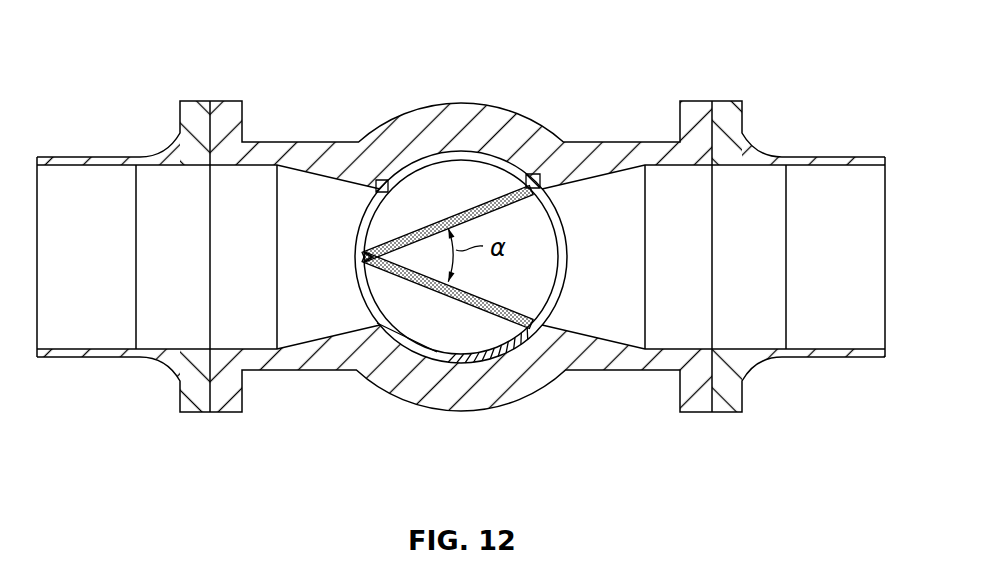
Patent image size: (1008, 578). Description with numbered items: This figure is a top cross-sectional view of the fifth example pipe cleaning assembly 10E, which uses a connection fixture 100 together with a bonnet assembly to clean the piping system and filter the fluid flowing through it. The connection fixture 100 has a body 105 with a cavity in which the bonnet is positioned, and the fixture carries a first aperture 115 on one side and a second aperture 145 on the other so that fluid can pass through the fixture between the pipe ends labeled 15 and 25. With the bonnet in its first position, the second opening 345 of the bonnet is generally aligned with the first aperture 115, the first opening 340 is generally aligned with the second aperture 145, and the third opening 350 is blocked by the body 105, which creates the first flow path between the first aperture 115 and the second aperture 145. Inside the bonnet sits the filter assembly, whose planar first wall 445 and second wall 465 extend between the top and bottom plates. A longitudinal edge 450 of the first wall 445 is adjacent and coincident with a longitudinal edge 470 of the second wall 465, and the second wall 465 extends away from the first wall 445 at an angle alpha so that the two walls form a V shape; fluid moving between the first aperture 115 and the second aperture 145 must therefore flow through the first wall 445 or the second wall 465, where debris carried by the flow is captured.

The pipe cleaning assembly 10E is at (180, 58).
The first port 15 is at (82, 158).
The second port 25 is at (846, 158).
The connection fixture 100 is at (266, 400).
The body 105 is at (572, 353).
The first aperture 115 is at (253, 166).
The second aperture 145 is at (695, 166).
The second opening 345 is at (366, 217).
The first opening 340 is at (556, 217).
The third opening 350 is at (430, 158).
The first wall 445 is at (471, 207).
The second wall 465 is at (472, 308).
The longitudinal edge 450 is at (365, 254).
The longitudinal edge 470 is at (365, 254).